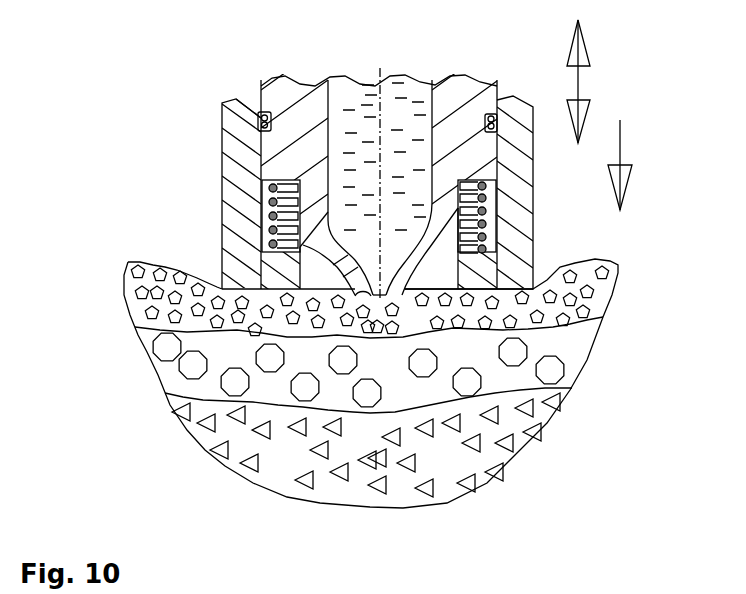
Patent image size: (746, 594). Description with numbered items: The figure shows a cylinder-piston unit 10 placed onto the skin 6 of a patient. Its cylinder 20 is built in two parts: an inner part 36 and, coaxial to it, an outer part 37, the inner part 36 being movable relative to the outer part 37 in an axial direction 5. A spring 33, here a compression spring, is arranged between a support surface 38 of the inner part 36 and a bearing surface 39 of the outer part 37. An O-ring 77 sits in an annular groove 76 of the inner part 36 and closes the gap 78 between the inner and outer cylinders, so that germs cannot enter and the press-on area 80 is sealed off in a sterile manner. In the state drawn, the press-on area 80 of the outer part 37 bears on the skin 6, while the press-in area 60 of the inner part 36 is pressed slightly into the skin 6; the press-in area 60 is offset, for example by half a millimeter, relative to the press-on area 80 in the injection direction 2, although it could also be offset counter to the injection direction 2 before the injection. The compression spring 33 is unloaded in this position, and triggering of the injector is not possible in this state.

The injection direction 2 is at (620, 135).
The axial direction 5 is at (578, 83).
The skin 6 is at (160, 257).
The cylinder-piston unit 10 is at (548, 209).
The cylinder 20 is at (545, 242).
The spring 33 is at (282, 200).
The inner part 36 is at (278, 168).
The outer part 37 is at (237, 120).
The support surface 38 is at (264, 182).
The bearing surface 39 is at (262, 252).
The press-in area 60 is at (397, 303).
The annular groove 76 is at (266, 115).
The O-ring 77 is at (262, 112).
The gap 78 is at (260, 136).
The press-on area 80 is at (493, 300).